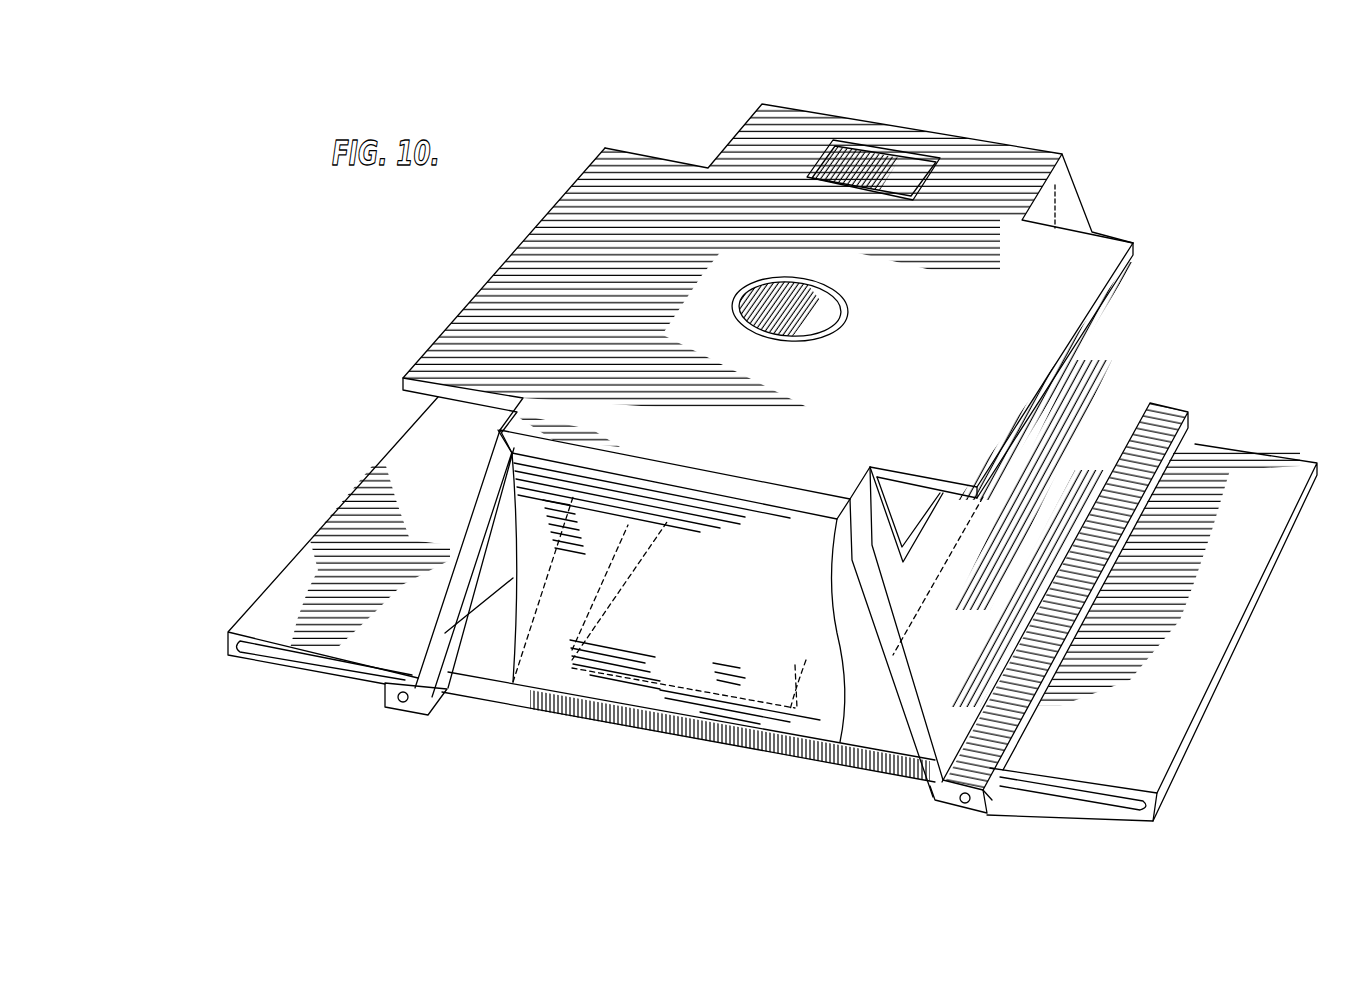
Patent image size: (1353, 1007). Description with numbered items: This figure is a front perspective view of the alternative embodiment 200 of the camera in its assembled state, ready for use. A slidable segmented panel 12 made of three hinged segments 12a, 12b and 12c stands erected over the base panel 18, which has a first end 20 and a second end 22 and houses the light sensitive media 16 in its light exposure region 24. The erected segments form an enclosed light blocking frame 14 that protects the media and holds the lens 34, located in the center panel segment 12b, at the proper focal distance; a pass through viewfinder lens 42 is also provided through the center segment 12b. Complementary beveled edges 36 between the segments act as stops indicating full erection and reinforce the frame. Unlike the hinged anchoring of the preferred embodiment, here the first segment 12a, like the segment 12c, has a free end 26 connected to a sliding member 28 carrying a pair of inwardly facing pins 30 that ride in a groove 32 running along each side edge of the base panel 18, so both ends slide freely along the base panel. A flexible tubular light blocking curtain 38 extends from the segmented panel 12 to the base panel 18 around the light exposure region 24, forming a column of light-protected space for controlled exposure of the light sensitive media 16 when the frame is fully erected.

The alternative embodiment 200 is at (1024, 110).
The slidable segmented panel 12 is at (1079, 193).
The first panel segment 12a is at (922, 732).
The center panel segment 12b is at (540, 440).
The third panel segment 12c is at (445, 633).
The light blocking frame 14 is at (801, 98).
The light sensitive media 16 is at (793, 693).
The base panel 18 is at (508, 693).
The first end 20 is at (1147, 820).
The second end 22 is at (290, 668).
The light exposure region 24 is at (665, 673).
The free end 26 is at (434, 688).
The sliding member 28 is at (418, 708).
The inwardly facing pins 30 is at (400, 705).
The groove 32 is at (273, 658).
The lens 34 is at (748, 280).
The complementary beveled edges 36 is at (498, 432).
The light blocking curtain 38 is at (753, 680).
The pass through viewfinder lens 42 is at (875, 160).